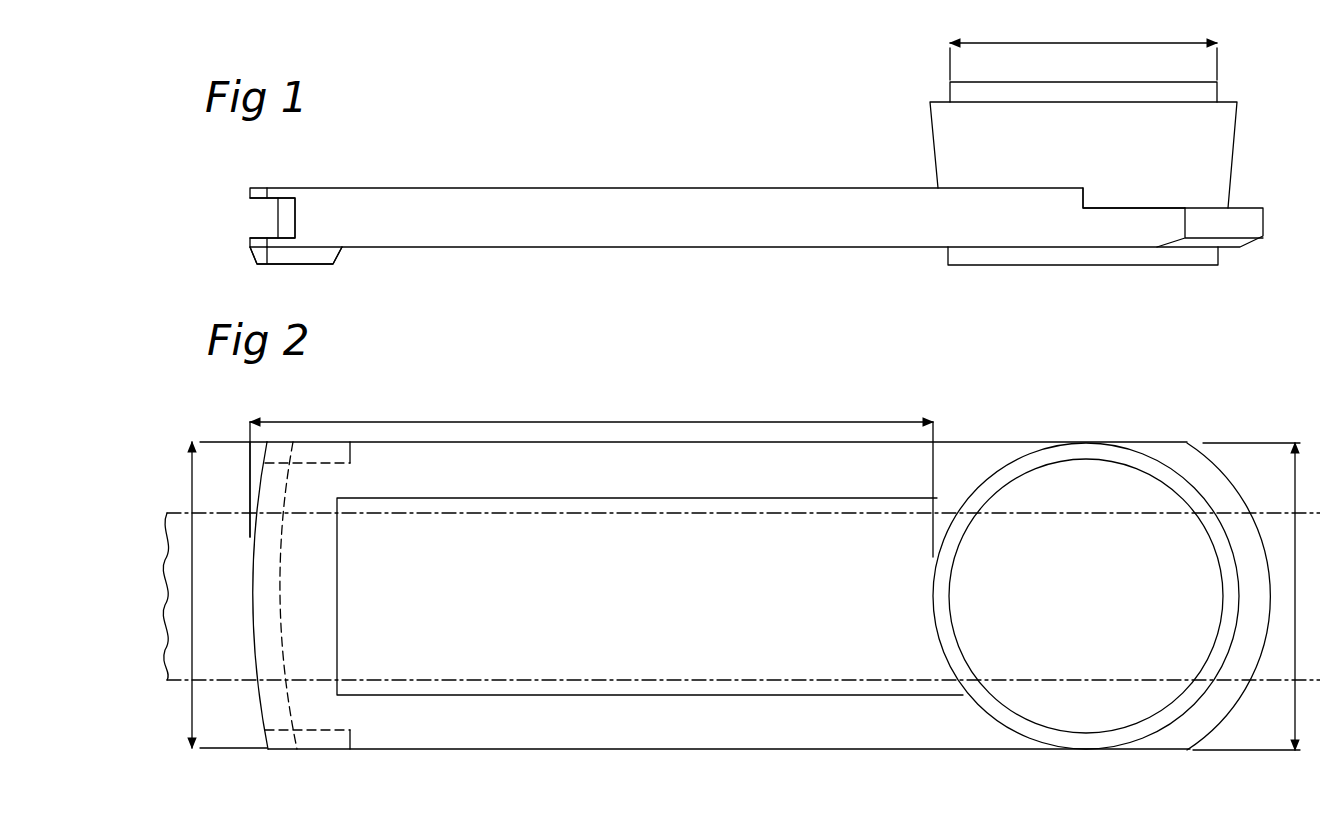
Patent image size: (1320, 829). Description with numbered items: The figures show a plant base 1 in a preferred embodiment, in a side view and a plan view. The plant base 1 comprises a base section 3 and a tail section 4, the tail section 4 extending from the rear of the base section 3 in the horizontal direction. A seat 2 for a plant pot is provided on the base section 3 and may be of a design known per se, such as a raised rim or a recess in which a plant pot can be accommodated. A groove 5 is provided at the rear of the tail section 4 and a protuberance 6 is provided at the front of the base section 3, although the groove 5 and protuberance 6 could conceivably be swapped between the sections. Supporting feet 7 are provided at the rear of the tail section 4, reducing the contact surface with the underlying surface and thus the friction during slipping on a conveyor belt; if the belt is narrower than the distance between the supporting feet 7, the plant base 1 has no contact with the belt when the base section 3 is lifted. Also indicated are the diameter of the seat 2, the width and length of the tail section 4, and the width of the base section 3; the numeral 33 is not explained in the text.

In FIG. 1, the plant base 1 is at (803, 267).
In FIG. 2, the plant base 1 is at (765, 407).
In FIG. 1, the seat 2 is at (1138, 93).
In FIG. 2, the seat 2 is at (1153, 477).
In FIG. 1, the base section 3 is at (1118, 183).
In FIG. 2, the base section 3 is at (1012, 612).
In FIG. 1, the tail section 4 is at (685, 217).
In FIG. 2, the tail section 4 is at (833, 463).
In FIG. 1, the groove 5 is at (265, 220).
In FIG. 2, the groove 5 is at (262, 578).
In FIG. 1, the protuberance 6 is at (1262, 223).
In FIG. 2, the protuberance 6 is at (1235, 520).
In FIG. 1, the supporting feet 7 is at (327, 257).
In FIG. 2, the supporting feet 7 is at (323, 452).
In FIG. 2, the recess 33 is at (460, 540).